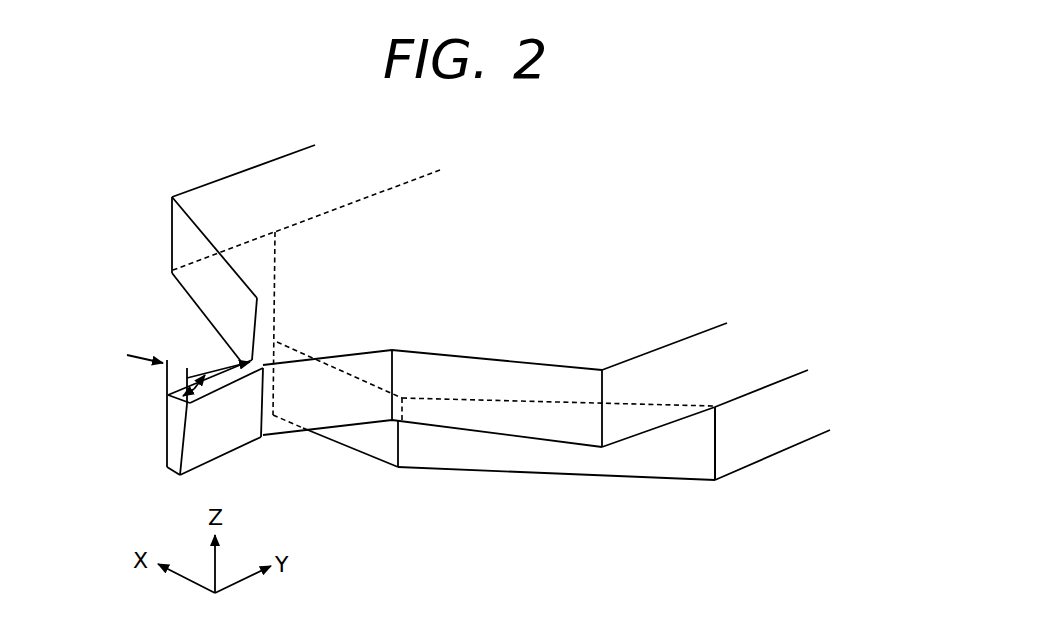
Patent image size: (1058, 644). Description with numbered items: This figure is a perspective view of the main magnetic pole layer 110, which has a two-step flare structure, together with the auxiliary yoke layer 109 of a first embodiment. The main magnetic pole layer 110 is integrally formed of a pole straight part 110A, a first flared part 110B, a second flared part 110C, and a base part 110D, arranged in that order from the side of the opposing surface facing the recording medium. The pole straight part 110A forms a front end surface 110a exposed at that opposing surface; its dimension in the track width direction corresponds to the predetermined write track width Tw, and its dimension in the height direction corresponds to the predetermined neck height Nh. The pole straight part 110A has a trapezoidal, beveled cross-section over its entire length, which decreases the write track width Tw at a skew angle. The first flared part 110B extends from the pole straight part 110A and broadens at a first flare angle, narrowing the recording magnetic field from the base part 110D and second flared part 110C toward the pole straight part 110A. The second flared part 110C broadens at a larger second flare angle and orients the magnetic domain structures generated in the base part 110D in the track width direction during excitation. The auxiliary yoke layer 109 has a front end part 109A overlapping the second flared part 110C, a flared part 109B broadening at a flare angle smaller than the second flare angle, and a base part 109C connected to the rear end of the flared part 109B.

The main magnetic pole layer 110 is at (566, 212).
The pole straight part 110A is at (212, 373).
The first flared part 110B is at (257, 315).
The second flared part 110C is at (203, 223).
The base part 110D is at (343, 195).
The front end surface 110a is at (167, 465).
The auxiliary yoke layer 109 is at (485, 490).
The front end part 109A is at (348, 437).
The flared part 109B is at (633, 463).
The base part 109C is at (765, 445).
The write track width Tw is at (177, 373).
The neck height Nh is at (227, 372).